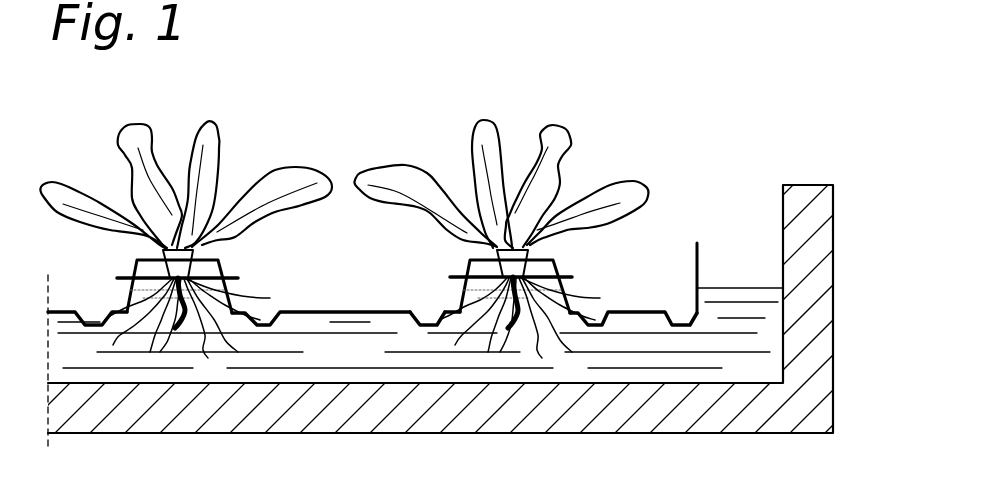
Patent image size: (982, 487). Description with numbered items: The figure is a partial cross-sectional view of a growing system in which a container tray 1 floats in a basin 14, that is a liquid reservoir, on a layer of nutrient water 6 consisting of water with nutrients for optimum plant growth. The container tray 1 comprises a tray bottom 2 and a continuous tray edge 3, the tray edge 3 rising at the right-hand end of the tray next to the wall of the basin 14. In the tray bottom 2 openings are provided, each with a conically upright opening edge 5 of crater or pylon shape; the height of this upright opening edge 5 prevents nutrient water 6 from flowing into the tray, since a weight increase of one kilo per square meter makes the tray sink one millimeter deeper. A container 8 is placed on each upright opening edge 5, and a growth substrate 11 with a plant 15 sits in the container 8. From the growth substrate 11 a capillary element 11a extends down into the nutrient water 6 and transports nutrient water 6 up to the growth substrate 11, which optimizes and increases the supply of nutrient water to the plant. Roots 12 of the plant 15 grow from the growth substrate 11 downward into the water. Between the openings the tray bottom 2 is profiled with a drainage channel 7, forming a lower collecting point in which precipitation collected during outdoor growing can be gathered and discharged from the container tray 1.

The container tray 1 is at (58, 312).
The tray bottom 2 is at (350, 312).
The tray edge 3 is at (698, 263).
The upright opening edge 5 is at (245, 279).
The nutrient water 6 is at (752, 313).
The drainage channel 7 is at (430, 318).
The container 8 is at (553, 263).
The growth substrate 11 is at (508, 263).
The capillary element 11a is at (232, 313).
The roots 12 is at (135, 312).
The basin 14 is at (805, 205).
The plant 15 is at (545, 192).